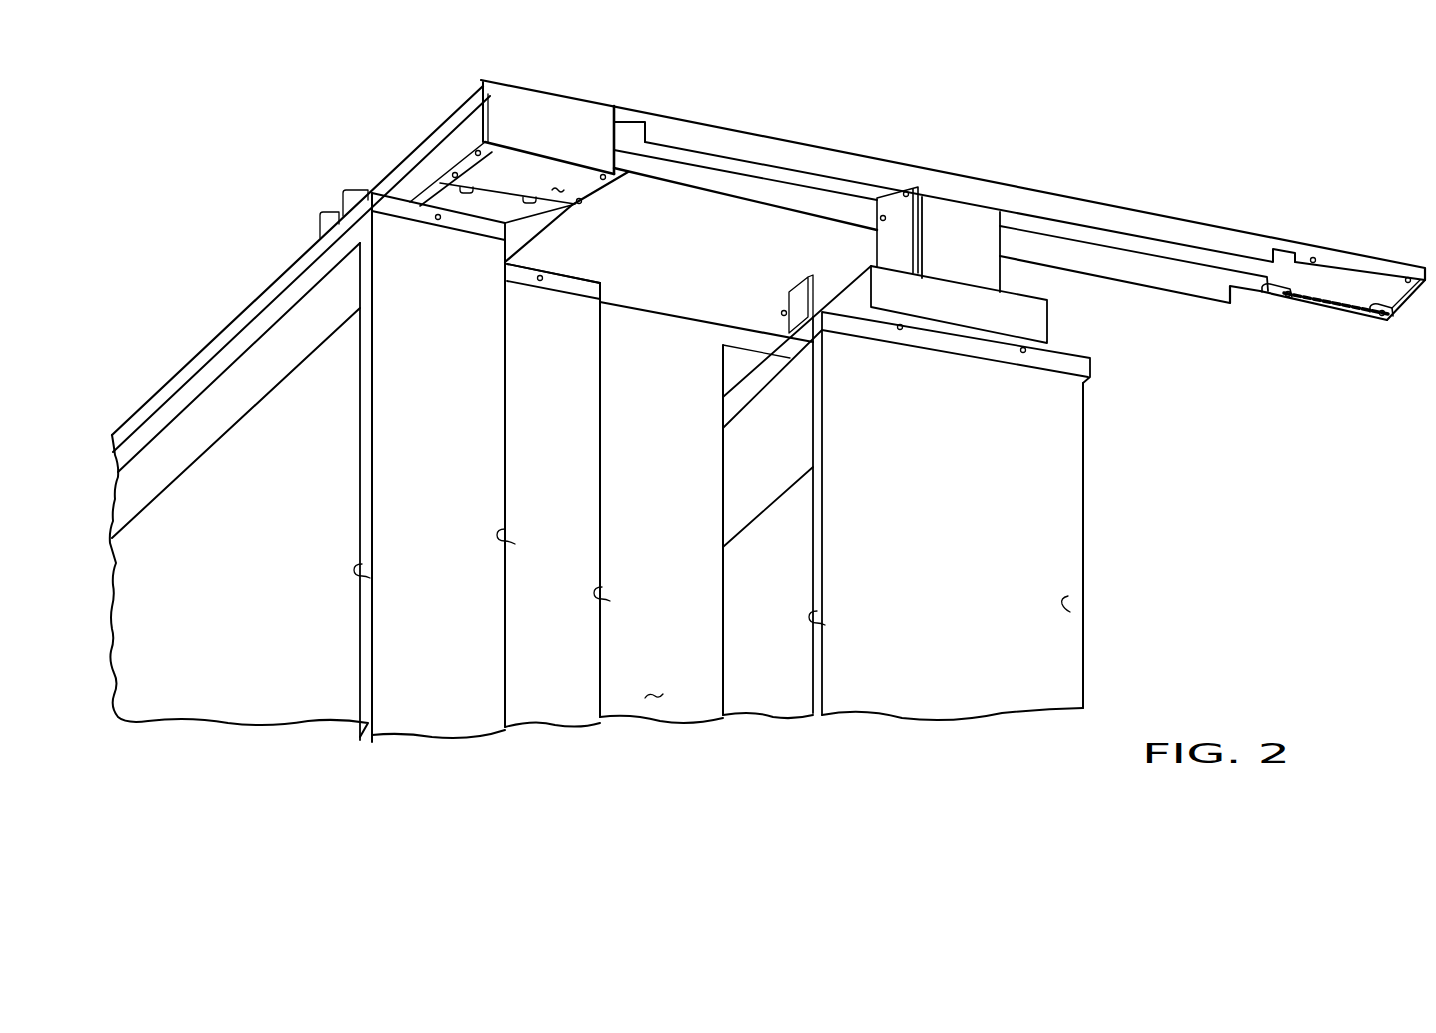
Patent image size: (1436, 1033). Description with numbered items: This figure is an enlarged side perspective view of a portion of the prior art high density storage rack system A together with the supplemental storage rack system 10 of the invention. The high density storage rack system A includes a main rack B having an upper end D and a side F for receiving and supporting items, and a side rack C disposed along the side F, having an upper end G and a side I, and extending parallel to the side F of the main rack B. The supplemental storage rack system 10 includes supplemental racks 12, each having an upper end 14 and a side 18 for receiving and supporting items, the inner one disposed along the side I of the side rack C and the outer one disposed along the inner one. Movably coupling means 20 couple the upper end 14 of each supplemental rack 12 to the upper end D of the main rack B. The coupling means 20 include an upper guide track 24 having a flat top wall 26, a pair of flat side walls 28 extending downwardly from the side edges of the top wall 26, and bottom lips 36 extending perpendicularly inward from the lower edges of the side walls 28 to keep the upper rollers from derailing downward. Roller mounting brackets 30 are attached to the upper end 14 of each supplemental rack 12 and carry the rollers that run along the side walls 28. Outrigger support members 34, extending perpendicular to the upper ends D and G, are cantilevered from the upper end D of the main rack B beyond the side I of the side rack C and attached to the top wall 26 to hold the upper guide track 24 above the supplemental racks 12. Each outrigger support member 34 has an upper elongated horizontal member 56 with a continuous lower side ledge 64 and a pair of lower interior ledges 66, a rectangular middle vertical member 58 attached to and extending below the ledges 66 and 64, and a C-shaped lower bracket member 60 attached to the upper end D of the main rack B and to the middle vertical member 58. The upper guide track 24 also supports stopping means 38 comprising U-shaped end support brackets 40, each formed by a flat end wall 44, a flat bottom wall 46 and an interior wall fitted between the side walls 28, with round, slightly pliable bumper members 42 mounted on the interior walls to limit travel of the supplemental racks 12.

The supplemental storage rack system 10 is at (700, 206).
The supplemental racks 12 is at (600, 483).
The upper end 14 is at (452, 226).
The side 18 is at (451, 491).
The movably coupling means 20 is at (366, 128).
The upper guide track 24 is at (419, 139).
The top wall 26 is at (485, 207).
The side walls 28 is at (397, 187).
The roller mounting brackets 30 is at (318, 223).
The outrigger support members 34 is at (1046, 185).
The bottom lips 36 is at (542, 243).
The stopping means 38 is at (570, 117).
The end support brackets 40 is at (630, 120).
The bumper members 42 is at (468, 188).
The flat end wall 44 is at (523, 114).
The flat bottom wall 46 is at (557, 176).
The upper elongated horizontal member 56 is at (1202, 221).
The middle vertical member 58 is at (995, 279).
The lower bracket member 60 is at (1056, 316).
The continuous lower side ledge 64 is at (1232, 240).
The lower interior ledges 66 is at (894, 200).
The high density storage rack system A is at (725, 728).
The main rack B is at (1068, 603).
The side rack C is at (655, 700).
The upper end D is at (1087, 355).
The side F is at (825, 625).
The upper end G is at (698, 319).
The side I is at (610, 598).